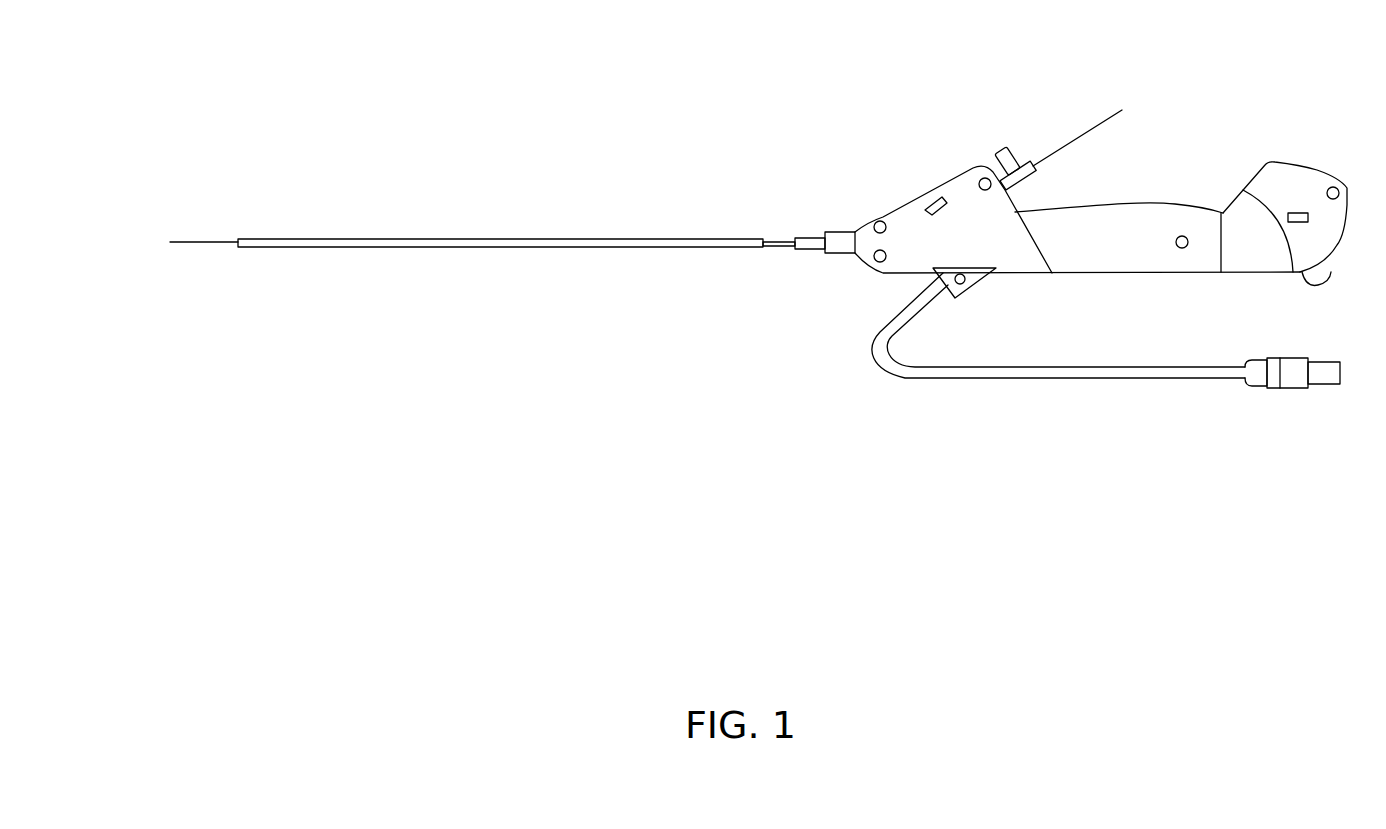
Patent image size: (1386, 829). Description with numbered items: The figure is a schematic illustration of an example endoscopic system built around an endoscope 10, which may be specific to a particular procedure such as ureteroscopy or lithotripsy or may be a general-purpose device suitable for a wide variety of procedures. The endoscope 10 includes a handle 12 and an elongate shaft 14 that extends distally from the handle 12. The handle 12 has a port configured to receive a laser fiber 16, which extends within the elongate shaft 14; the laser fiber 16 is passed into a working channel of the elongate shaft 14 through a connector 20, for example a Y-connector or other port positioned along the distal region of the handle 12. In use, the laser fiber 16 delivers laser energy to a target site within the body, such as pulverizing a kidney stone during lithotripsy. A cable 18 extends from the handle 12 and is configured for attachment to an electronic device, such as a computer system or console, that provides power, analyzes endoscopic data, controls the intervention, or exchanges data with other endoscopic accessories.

The endoscope 10 is at (338, 112).
The handle 12 is at (1235, 132).
The elongate shaft 14 is at (502, 247).
The laser fiber 16 is at (205, 242).
The cable 18 is at (1075, 367).
The connector 20 is at (1010, 140).